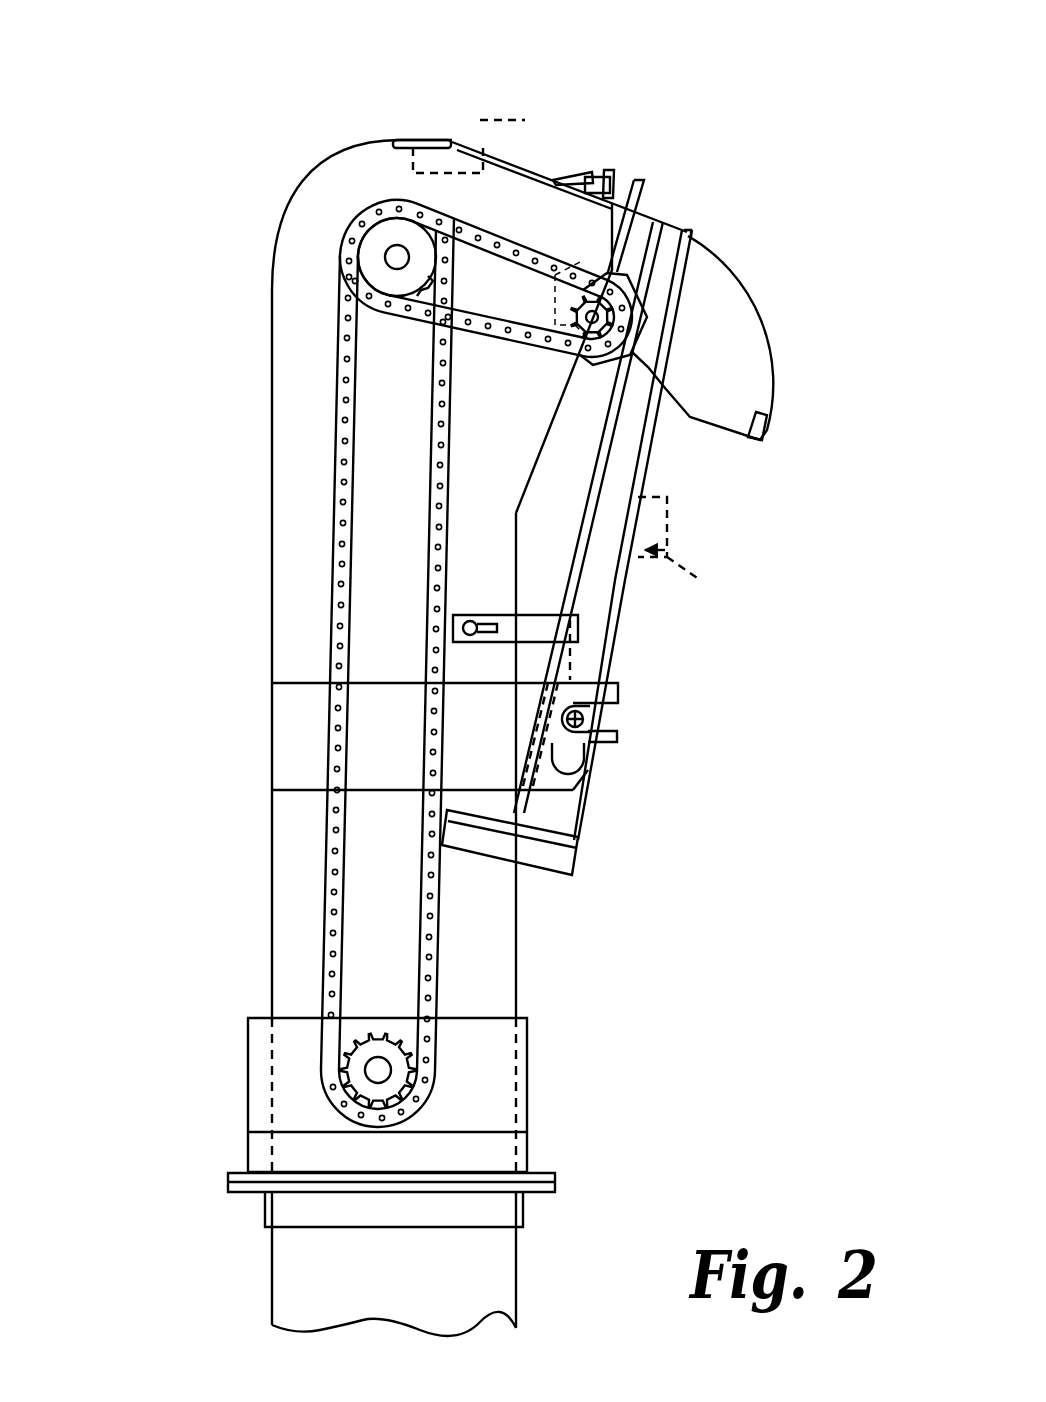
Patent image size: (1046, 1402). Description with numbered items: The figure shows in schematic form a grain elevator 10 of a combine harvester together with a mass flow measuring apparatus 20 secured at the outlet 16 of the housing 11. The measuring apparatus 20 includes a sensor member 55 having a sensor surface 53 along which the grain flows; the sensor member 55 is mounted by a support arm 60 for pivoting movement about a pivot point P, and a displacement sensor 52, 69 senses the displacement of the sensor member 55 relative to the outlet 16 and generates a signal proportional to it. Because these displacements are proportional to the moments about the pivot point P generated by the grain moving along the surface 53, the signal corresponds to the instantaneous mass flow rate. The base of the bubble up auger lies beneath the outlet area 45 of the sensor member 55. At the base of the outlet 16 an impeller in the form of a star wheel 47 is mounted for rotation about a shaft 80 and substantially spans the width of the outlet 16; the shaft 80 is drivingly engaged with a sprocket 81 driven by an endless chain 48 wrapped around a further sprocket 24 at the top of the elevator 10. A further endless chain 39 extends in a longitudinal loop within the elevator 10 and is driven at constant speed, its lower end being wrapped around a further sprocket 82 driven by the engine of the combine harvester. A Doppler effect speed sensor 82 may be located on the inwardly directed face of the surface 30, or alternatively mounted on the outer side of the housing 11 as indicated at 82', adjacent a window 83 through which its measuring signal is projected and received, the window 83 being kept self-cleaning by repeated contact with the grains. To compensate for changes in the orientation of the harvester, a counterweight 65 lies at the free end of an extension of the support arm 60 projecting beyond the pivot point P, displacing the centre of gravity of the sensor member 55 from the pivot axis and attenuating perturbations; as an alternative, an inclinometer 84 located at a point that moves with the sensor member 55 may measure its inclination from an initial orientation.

The grain elevator 10 is at (246, 468).
The housing 11 is at (248, 256).
The outlet 16 is at (600, 247).
The mass flow measuring apparatus 20 is at (746, 108).
The further sprocket 24 is at (380, 232).
The surface 30 is at (540, 173).
The endless chain 39 is at (330, 655).
The outlet area of sensor member 45 is at (738, 455).
The star wheel 47 is at (562, 348).
The endless chain 48 is at (500, 333).
The displacement sensor 52 is at (613, 175).
The sensor surface 53 is at (762, 445).
The sensor member 55 is at (770, 333).
The support arm 60 is at (597, 605).
The counterweight 65 is at (548, 855).
The displacement sensor 69 is at (641, 180).
The shaft 80 is at (563, 303).
The sprocket 81 is at (567, 319).
The sprocket / Doppler effect sensor 82 is at (341, 576).
The radar Doppler effect speed sensor 82' is at (539, 83).
The window 83 is at (527, 146).
The inclinometer 84 is at (695, 554).
The pivot point P is at (592, 720).